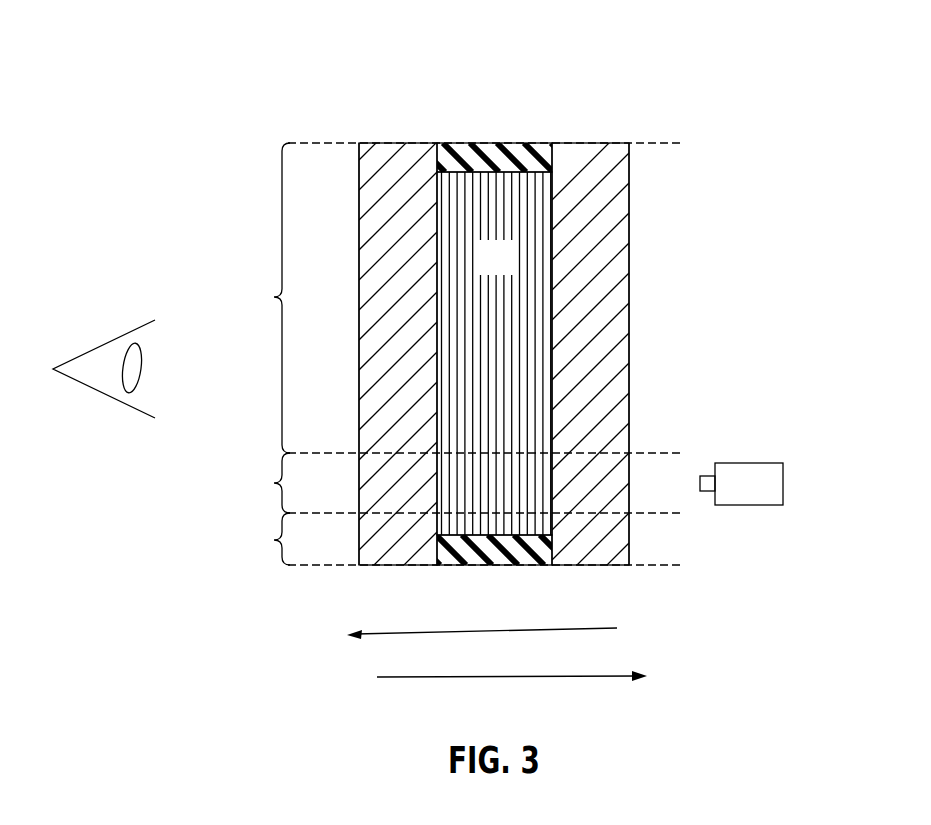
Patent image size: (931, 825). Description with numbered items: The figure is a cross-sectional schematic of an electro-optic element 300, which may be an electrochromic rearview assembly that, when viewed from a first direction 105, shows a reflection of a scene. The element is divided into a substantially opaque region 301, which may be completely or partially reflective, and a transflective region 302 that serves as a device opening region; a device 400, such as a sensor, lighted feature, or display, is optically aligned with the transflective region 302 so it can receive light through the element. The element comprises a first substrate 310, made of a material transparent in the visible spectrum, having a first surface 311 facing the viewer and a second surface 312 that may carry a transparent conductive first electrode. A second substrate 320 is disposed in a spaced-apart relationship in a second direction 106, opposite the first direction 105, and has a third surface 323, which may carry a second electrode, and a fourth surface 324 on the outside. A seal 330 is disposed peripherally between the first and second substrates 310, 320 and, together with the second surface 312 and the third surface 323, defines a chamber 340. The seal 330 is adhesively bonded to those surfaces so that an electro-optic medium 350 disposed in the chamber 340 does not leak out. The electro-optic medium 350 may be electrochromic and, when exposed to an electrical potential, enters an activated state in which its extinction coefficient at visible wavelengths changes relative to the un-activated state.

The electro-optic element 300 is at (232, 94).
The substantially opaque region 301 is at (262, 354).
The transflective region 302 is at (262, 483).
The first substrate 310 is at (390, 332).
The first surface 311 is at (358, 250).
The second surface 312 is at (442, 147).
The second substrate 320 is at (597, 333).
The third surface 323 is at (549, 147).
The fourth surface 324 is at (630, 250).
The seal 330 is at (461, 566).
The chamber 340 is at (512, 270).
The electro-optic medium 350 is at (513, 408).
The device 400 is at (753, 462).
The first direction 105 is at (500, 630).
The second direction 106 is at (492, 675).